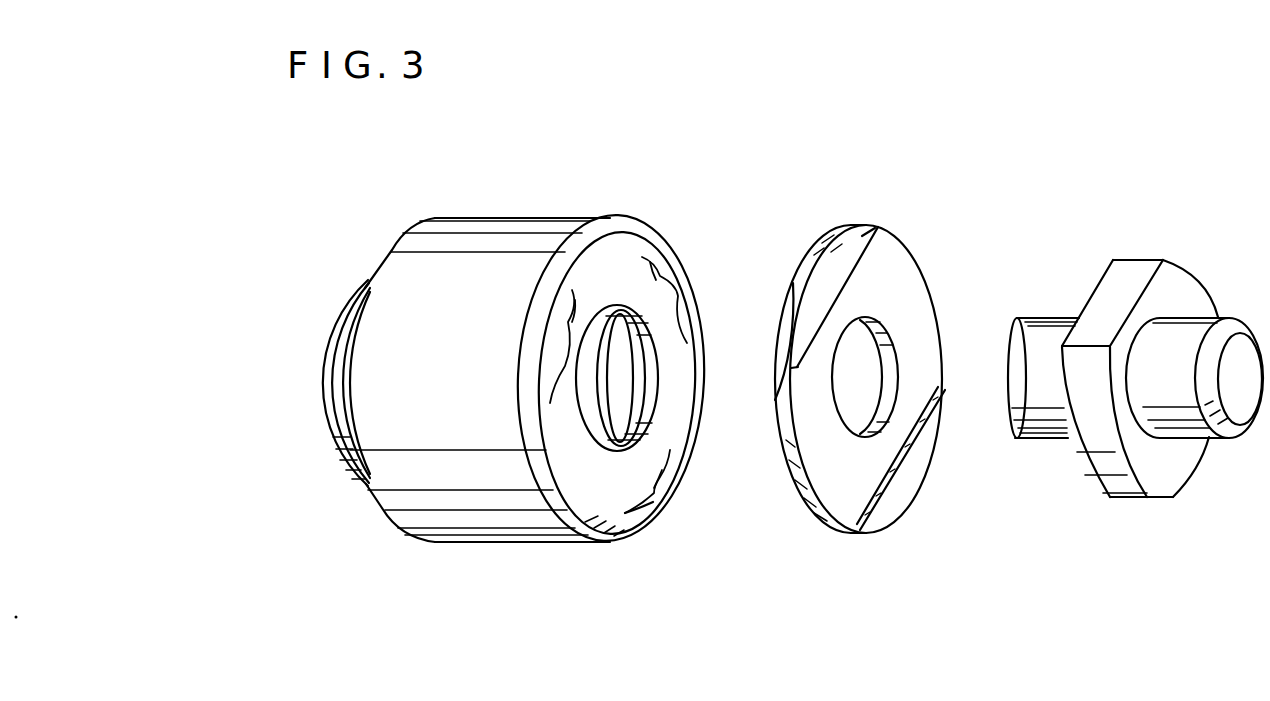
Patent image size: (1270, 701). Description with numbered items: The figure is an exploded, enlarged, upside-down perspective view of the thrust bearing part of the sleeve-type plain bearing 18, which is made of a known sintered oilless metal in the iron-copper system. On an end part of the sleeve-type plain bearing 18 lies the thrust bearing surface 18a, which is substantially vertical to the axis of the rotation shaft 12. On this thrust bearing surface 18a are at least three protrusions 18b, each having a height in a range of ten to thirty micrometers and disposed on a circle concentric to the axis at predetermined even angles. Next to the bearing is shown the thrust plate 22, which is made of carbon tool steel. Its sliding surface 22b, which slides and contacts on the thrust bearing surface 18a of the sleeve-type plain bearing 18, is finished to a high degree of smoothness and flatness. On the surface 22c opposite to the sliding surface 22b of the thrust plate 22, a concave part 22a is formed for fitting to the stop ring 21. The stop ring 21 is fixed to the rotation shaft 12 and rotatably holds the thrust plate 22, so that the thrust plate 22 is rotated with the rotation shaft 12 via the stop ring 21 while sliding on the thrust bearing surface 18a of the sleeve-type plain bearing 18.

The rotation shaft 12 is at (1187, 423).
The sleeve-type plain bearing 18 is at (413, 522).
The thrust bearing surface 18a is at (582, 490).
The protrusions 18b is at (653, 502).
The stop ring 21 is at (1100, 478).
The thrust plate 22 is at (809, 515).
The concave part 22a is at (882, 463).
The sliding surface 22b is at (795, 286).
The surface opposite to the sliding surface 22c is at (872, 227).